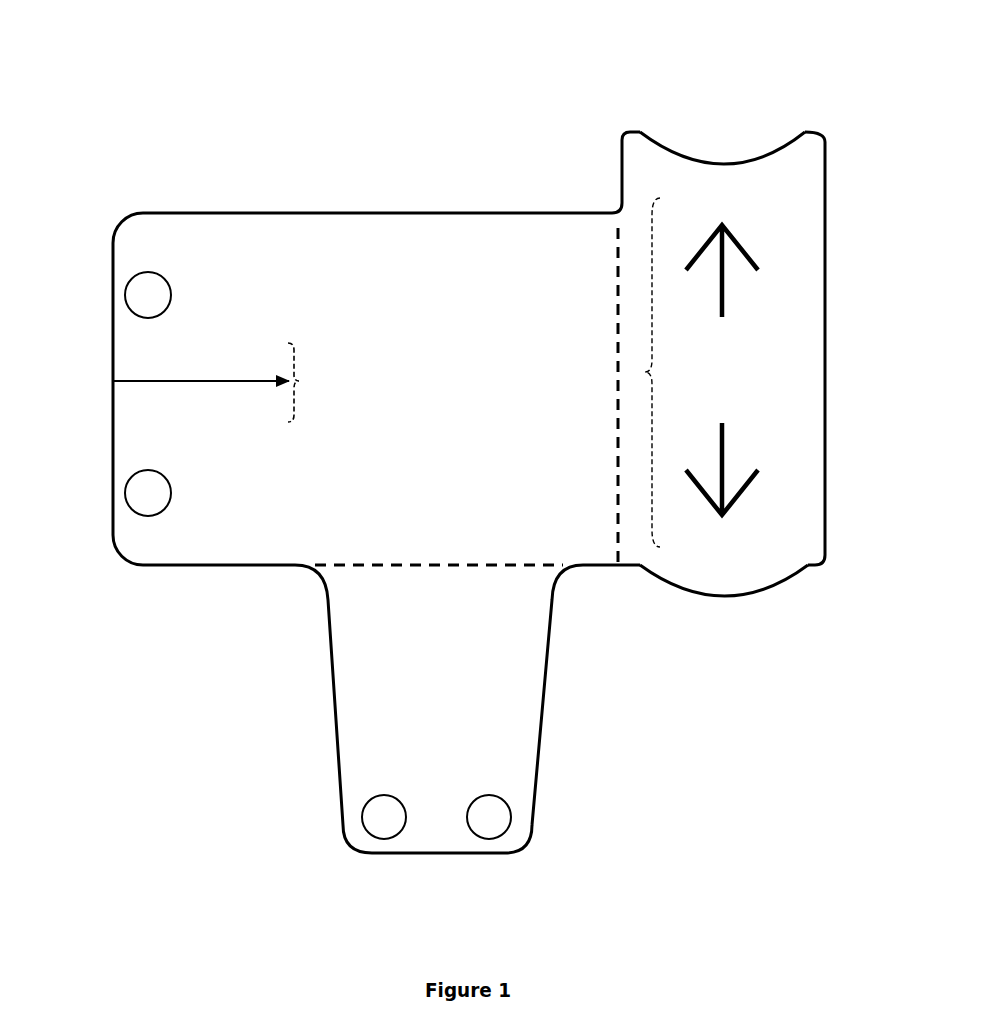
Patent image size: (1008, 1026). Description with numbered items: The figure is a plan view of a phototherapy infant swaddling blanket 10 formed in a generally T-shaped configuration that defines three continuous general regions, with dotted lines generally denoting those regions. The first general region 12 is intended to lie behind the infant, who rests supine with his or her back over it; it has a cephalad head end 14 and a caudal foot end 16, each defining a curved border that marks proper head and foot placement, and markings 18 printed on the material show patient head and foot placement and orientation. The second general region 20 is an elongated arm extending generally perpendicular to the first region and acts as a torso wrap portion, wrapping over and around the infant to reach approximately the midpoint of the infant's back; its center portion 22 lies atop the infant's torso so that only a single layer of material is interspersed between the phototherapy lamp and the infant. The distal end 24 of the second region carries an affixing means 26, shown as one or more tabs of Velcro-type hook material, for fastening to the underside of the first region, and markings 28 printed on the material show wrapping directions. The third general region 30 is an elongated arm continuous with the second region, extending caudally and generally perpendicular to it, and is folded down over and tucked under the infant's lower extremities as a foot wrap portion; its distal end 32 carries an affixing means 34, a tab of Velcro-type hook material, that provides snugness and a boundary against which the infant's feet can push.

The swaddling blanket 10 is at (457, 479).
The first general region 12 is at (770, 352).
The head end 14 is at (722, 157).
The foot end 16 is at (730, 599).
The markings 18 is at (645, 372).
The second general region 20 is at (254, 237).
The center portion 22 is at (510, 396).
The distal end 24 is at (152, 426).
The affixing means 26 is at (124, 285).
The markings 28 is at (300, 380).
The third general region 30 is at (378, 675).
The distal end 32 is at (435, 832).
The affixing means 34 is at (400, 800).